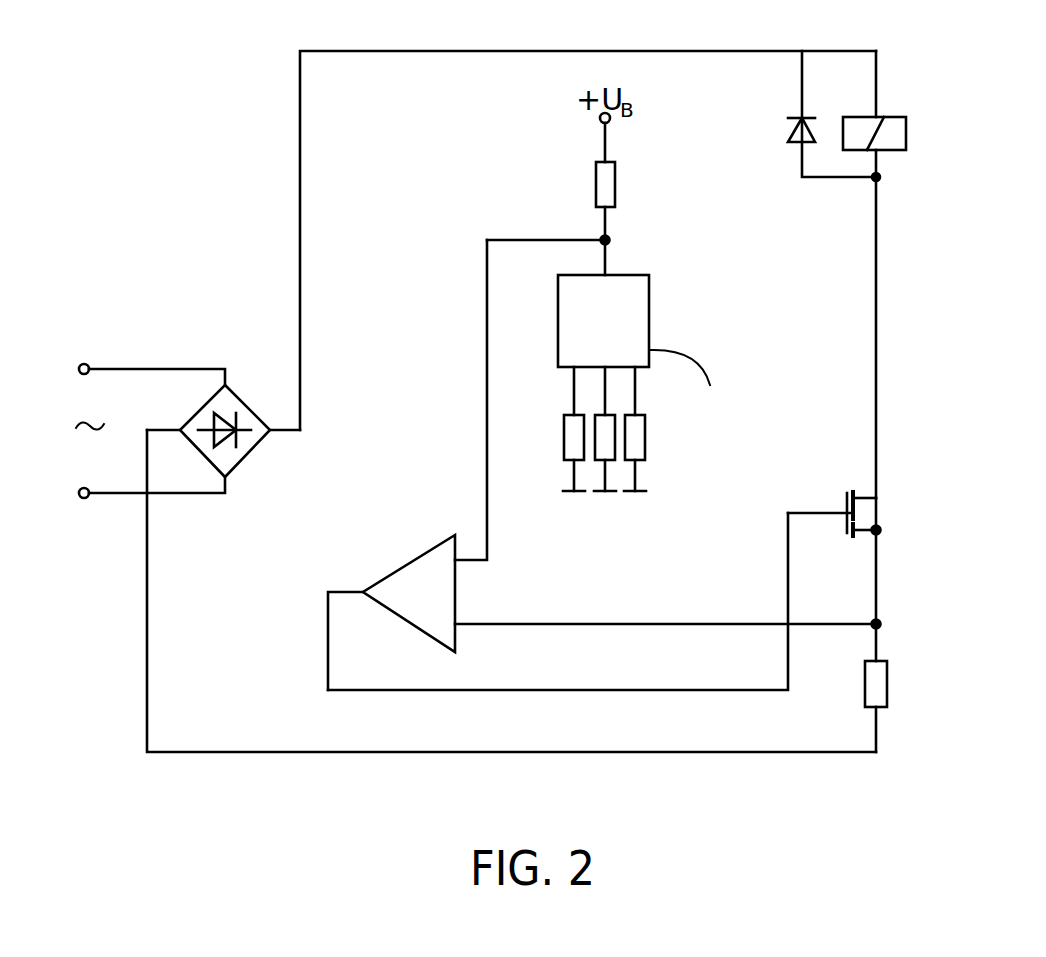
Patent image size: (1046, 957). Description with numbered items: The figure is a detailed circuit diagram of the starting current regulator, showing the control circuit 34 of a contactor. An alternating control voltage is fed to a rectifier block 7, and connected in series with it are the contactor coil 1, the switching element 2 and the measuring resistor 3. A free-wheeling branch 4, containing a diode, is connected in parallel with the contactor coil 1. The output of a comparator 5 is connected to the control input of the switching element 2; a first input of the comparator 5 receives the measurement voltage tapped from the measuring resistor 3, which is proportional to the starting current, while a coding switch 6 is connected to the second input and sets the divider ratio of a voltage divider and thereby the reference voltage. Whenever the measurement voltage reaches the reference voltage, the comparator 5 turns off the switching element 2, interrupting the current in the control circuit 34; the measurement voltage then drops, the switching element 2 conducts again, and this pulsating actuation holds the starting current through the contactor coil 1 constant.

The contactor coil 1 is at (891, 88).
The switching element 2 is at (876, 503).
The measuring resistor 3 is at (888, 686).
The free-wheeling branch 4 is at (802, 168).
The comparator 5 is at (414, 560).
The coding switch 6 is at (649, 313).
The rectifier block 7 is at (234, 462).
The control circuit 34 is at (520, 51).